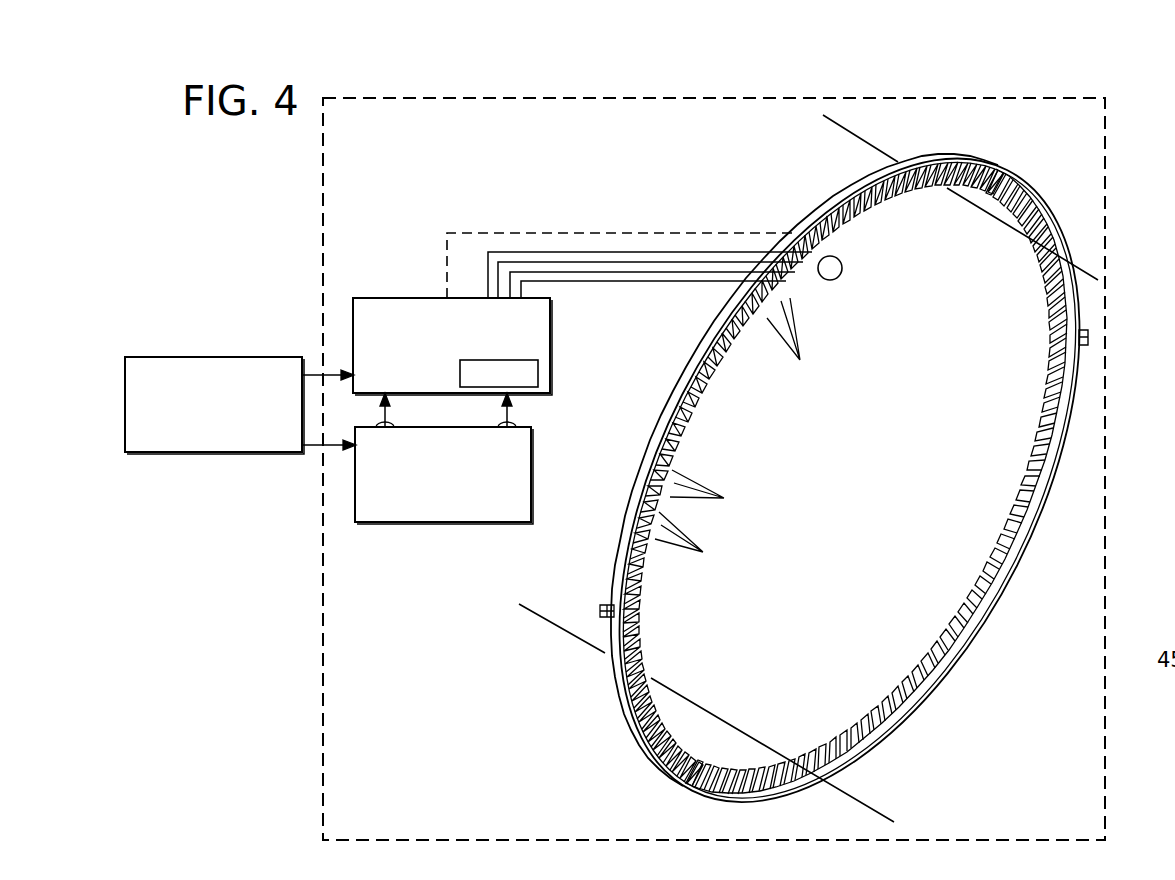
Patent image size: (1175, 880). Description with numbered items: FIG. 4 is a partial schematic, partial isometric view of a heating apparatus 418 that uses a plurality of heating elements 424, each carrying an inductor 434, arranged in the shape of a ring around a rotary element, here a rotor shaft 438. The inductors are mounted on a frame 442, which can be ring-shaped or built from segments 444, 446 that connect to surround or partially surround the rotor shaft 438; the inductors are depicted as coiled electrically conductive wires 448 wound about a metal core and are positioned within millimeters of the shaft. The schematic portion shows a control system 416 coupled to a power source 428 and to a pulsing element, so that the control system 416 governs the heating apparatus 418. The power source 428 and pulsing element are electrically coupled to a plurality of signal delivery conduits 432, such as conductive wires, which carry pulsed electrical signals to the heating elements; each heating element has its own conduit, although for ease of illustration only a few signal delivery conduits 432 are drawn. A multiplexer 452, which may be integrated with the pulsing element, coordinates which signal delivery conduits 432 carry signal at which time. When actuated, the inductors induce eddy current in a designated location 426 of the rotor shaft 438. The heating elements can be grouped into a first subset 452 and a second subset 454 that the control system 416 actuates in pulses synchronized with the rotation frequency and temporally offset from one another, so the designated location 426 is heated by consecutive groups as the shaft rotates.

The heating apparatus 418 is at (428, 97).
The control system 416 is at (194, 432).
The power source 428 is at (424, 502).
The multiplexer 452 is at (481, 385).
The signal delivery conduits 432 is at (657, 283).
The designated location 426 is at (843, 268).
The rotor shaft 438 is at (860, 138).
The frame segment 444 is at (1070, 376).
The frame segment 446 is at (1082, 312).
The frame 442 is at (651, 762).
The second subset of heating elements 454 is at (868, 482).
The electrodes 424 is at (813, 474).
The electrodes 434 is at (1174, 746).
The coiled electrically conductive wires 448 is at (1160, 616).